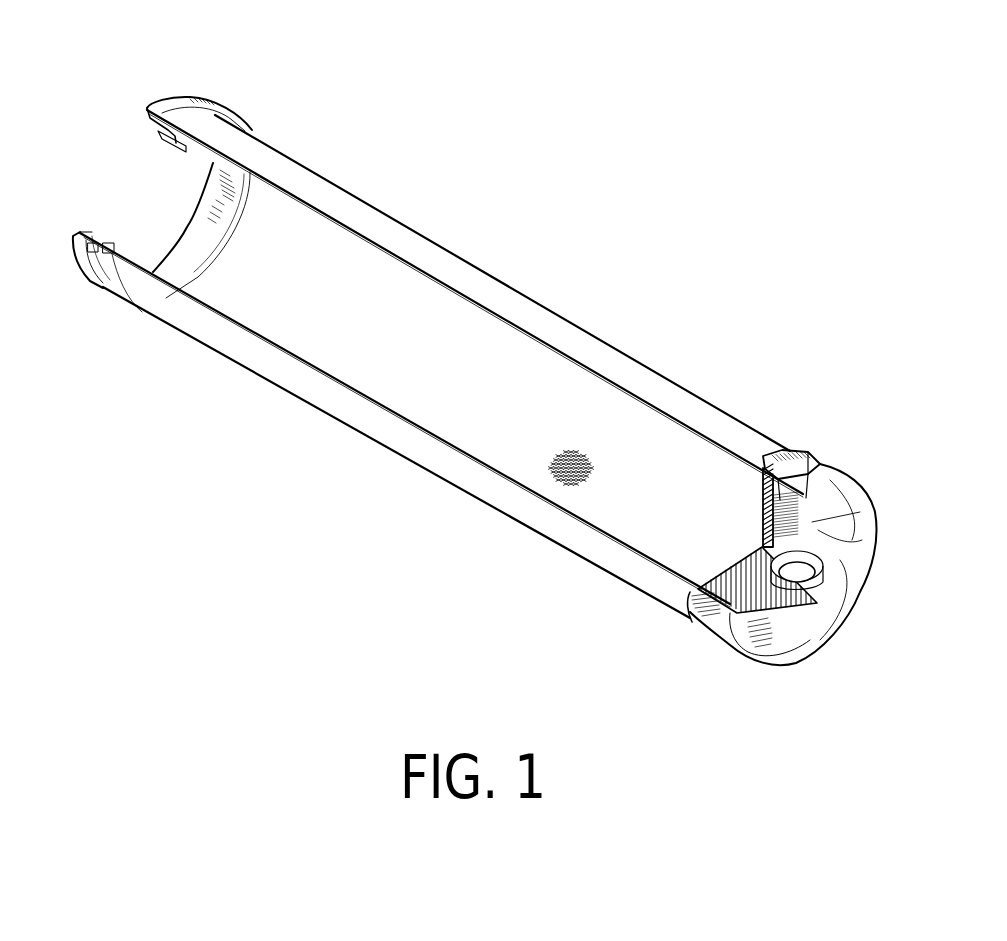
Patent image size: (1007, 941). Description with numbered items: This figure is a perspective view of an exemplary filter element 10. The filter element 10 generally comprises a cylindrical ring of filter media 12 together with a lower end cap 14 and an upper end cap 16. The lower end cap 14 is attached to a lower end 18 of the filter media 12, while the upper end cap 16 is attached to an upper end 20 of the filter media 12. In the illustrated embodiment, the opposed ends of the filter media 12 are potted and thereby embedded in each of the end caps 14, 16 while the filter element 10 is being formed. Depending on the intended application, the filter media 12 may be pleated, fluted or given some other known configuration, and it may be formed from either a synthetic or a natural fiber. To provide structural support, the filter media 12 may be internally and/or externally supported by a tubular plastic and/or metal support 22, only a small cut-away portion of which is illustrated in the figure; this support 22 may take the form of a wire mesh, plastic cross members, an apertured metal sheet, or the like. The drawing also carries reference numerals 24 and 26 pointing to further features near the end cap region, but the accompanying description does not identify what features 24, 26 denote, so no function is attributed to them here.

The filter element 10 is at (322, 437).
The filter media 12 is at (405, 456).
The lower end cap 14 is at (88, 300).
The upper end cap 16 is at (775, 686).
The lower end 18 is at (208, 140).
The upper end 20 is at (673, 607).
The support 22 is at (569, 433).
The end cap 24 is at (203, 110).
The curved band 26 is at (118, 172).